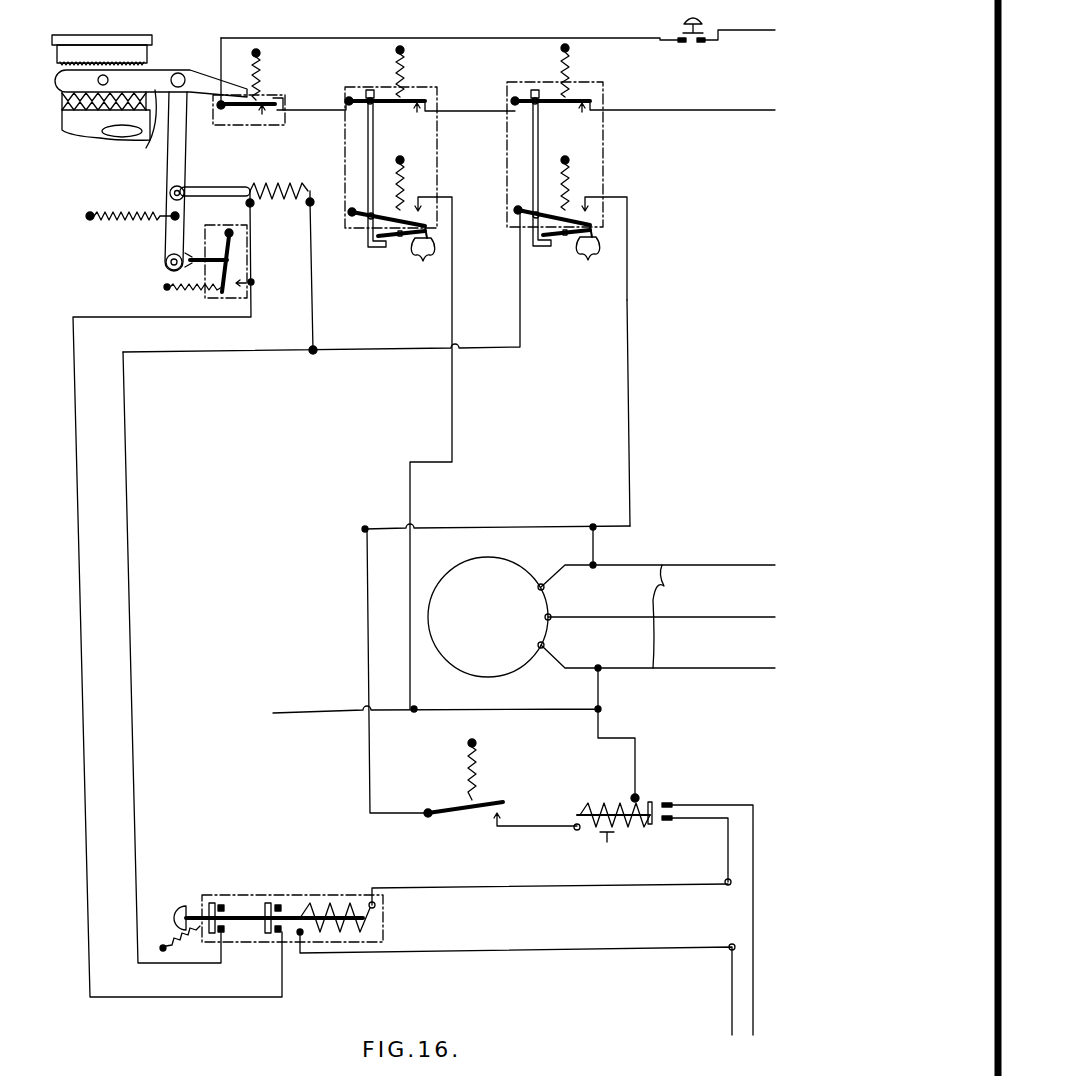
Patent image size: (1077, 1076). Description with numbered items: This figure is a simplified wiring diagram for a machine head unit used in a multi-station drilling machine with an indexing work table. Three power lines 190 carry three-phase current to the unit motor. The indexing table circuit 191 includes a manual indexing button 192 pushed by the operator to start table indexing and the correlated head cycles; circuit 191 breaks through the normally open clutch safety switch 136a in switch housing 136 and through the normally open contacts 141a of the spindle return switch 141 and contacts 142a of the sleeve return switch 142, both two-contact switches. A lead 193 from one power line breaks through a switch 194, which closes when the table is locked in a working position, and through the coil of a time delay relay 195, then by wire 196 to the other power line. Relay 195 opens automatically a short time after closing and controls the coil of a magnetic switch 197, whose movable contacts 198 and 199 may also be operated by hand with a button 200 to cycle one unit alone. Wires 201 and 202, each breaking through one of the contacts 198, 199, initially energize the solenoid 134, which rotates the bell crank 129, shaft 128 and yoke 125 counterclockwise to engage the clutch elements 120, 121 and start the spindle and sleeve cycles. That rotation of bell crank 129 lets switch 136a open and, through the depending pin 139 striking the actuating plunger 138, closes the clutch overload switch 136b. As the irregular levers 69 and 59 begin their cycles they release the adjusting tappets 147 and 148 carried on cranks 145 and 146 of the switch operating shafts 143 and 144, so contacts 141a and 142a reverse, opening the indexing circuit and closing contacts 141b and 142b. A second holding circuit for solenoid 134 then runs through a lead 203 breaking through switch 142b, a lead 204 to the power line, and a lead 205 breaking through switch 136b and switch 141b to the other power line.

The clutch element 120 is at (62, 99).
The clutch element 121 is at (60, 122).
The yoke 125 is at (134, 129).
The shaft 128 is at (182, 77).
The bell crank 129 is at (166, 247).
The solenoid 134 is at (270, 199).
The switch housing 136 is at (272, 92).
The clutch safety switch 136a is at (262, 112).
The clutch overload switch 136b is at (244, 269).
The clutch overload cut-off switch operator 138 is at (196, 272).
The depending pin 139 is at (152, 274).
The spindle return switch 141 is at (434, 86).
The normally open contacts 141a is at (401, 108).
The switch contacts 141b is at (421, 206).
The sleeve return switch 142 is at (602, 86).
The normally open contacts 142a is at (561, 108).
The switch contacts 142b is at (589, 206).
The switch operating shaft 143 is at (368, 156).
The switch operating shaft 144 is at (540, 158).
The crank 145 is at (392, 252).
The crank 146 is at (560, 248).
The adjusting tappet 147 is at (430, 236).
The adjusting tappet 148 is at (596, 236).
The irregular lever 59 is at (588, 259).
The irregular lever 69 is at (421, 260).
The power lines 190 is at (601, 602).
The power circuit for the indexing table 191 is at (512, 38).
The manual indexing button 192 is at (697, 19).
The lead 193 is at (367, 647).
The switch 194 is at (456, 820).
The time delay relay 195 is at (618, 797).
The wire 196 is at (637, 760).
The magnetic switch 197 is at (294, 901).
The movable contact 198 is at (213, 898).
The movable contact 199 is at (270, 898).
The button 200 is at (183, 910).
The wire 201 is at (130, 549).
The wire 202 is at (78, 550).
The lead 203 is at (332, 349).
The lead 204 is at (632, 500).
The lead 205 is at (431, 465).